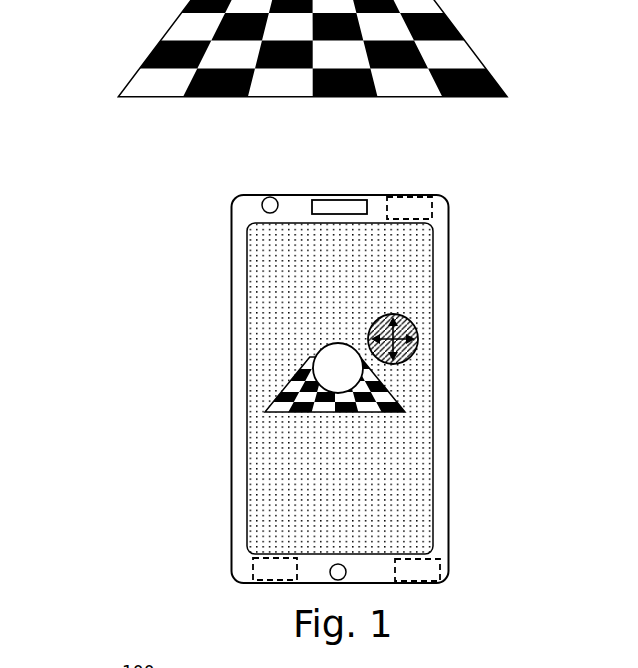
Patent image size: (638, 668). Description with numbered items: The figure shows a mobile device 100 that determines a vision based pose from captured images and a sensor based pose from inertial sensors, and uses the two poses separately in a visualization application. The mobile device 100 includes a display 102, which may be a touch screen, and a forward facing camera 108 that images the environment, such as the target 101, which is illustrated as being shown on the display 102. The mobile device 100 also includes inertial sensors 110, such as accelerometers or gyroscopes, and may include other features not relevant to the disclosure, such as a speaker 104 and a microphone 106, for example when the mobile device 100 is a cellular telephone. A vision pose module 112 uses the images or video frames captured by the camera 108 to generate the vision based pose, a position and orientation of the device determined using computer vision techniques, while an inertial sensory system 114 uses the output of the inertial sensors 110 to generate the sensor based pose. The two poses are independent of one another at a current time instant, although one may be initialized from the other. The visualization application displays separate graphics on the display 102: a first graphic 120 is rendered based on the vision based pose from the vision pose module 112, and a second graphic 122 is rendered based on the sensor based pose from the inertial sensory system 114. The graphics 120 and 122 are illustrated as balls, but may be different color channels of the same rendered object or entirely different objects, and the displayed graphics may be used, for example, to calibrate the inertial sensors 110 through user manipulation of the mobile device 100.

The mobile device 100 is at (245, 165).
The target 101 is at (138, 70).
The display 102 is at (435, 342).
The speaker 104 is at (352, 200).
The microphone 106 is at (332, 567).
The forward facing camera 108 is at (262, 205).
The inertial sensors 110 is at (387, 205).
The vision pose module 112 is at (440, 574).
The inertial sensory system (INS) 114 is at (253, 567).
The first graphic 120 is at (318, 352).
The second graphic 122 is at (411, 318).